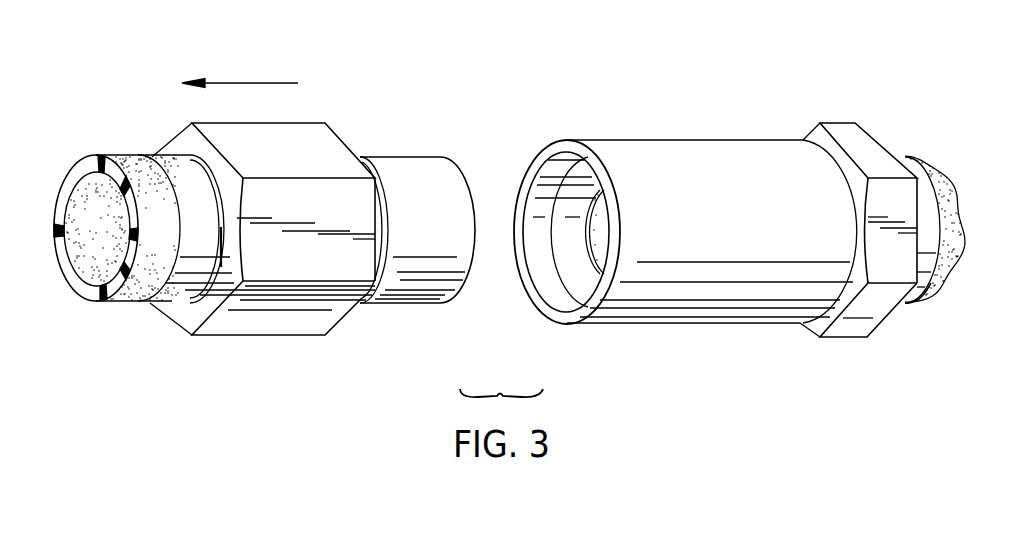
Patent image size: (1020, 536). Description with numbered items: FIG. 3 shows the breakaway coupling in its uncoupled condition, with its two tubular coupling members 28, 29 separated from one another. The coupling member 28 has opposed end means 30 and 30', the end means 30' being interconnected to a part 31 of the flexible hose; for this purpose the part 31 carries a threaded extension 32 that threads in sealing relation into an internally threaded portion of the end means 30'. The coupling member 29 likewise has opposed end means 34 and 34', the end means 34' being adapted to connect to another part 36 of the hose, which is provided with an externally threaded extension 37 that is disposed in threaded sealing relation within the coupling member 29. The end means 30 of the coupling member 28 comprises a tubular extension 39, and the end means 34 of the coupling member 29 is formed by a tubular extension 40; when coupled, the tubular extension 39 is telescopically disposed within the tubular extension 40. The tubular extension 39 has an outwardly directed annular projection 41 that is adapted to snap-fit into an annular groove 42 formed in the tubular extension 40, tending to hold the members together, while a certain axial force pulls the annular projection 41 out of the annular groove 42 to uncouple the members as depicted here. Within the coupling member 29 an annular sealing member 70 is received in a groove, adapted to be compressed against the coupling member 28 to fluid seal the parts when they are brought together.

The coupling member 28 is at (290, 325).
The coupling member 29 is at (858, 137).
The end means 30 is at (441, 187).
The end means 30' is at (157, 212).
The part of the flexible hose 31 is at (120, 153).
The threaded extension 32 is at (178, 278).
The end means 34 is at (567, 205).
The end means 34' is at (918, 189).
The part of the hose means 36 is at (930, 302).
The externally threaded extension 37 is at (908, 167).
The tubular extension 39 is at (398, 157).
The tubular extension 40 is at (663, 153).
The annular projection 41 is at (388, 262).
The annular groove 42 is at (557, 270).
The annular sealing member 70 is at (593, 207).